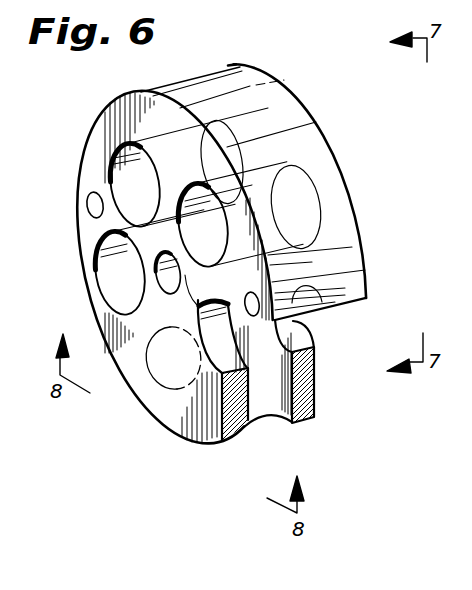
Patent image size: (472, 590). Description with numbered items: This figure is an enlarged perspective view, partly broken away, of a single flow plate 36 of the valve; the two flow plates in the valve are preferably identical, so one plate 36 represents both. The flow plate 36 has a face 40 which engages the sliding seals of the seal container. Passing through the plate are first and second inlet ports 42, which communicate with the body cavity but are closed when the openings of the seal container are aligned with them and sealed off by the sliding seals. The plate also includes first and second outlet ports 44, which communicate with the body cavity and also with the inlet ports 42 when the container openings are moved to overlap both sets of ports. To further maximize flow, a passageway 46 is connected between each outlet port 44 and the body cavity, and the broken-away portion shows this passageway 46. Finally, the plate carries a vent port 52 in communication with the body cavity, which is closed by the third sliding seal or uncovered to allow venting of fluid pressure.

The flow plate 36 is at (246, 83).
The face 40 is at (321, 128).
The inlet ports 42 is at (232, 186).
The outlet ports 44 is at (103, 263).
The passageway 46 is at (251, 417).
The vent port 52 is at (170, 293).